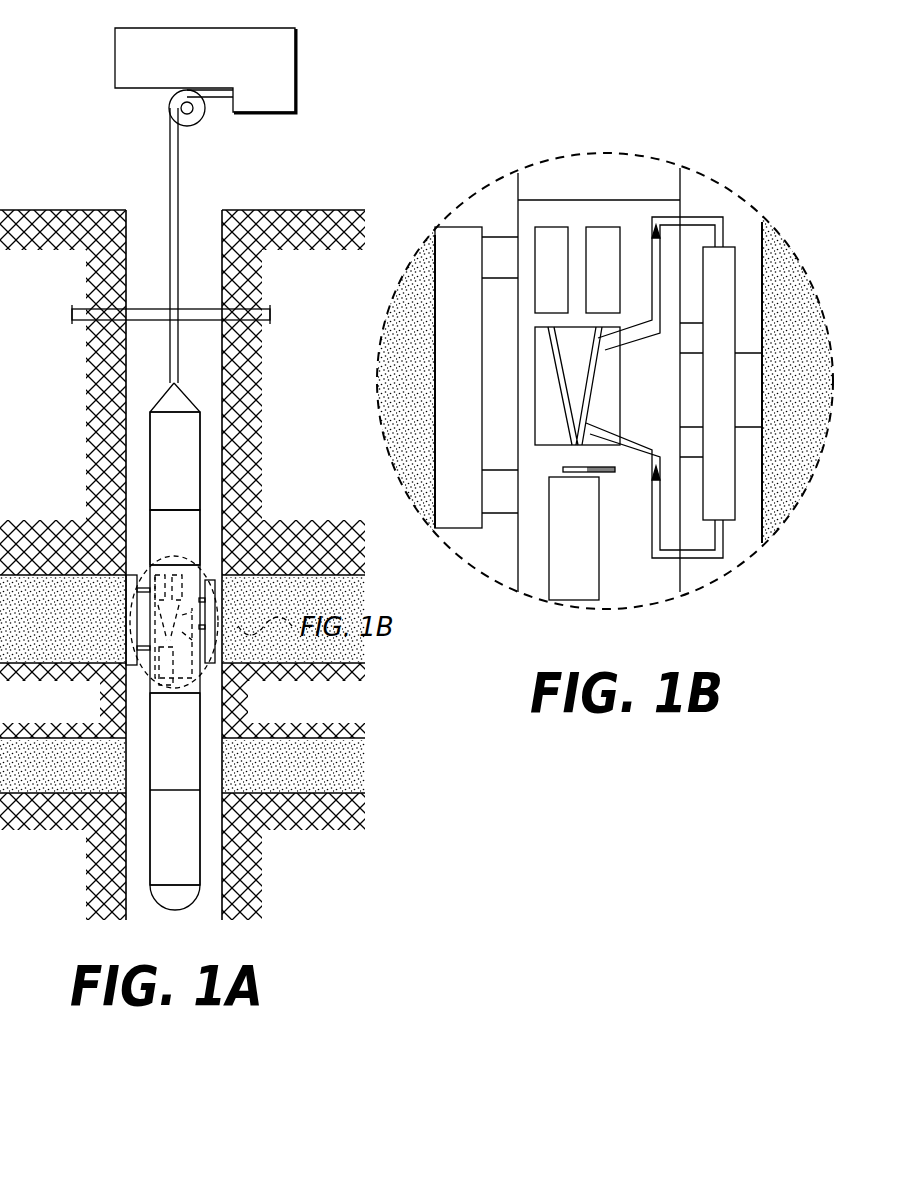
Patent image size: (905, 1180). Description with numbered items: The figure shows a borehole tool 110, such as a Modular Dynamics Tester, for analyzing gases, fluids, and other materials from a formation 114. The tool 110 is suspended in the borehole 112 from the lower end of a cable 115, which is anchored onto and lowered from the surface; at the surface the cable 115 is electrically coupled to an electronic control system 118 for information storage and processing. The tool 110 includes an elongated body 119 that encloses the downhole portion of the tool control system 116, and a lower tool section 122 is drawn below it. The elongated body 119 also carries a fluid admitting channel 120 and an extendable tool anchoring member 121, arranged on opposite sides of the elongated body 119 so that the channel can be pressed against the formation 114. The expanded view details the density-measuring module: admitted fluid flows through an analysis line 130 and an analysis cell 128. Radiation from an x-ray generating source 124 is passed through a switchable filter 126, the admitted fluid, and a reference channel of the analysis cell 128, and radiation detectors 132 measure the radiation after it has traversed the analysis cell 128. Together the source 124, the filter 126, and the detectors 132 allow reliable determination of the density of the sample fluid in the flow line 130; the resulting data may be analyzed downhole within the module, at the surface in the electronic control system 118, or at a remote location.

In FIG. 1A, the borehole tool 110 is at (207, 503).
In FIG. 1A, the borehole 112 is at (220, 248).
In FIG. 1A, the formation 114 is at (81, 633).
In FIG. 1A, the cable 115 is at (169, 172).
In FIG. 1A, the tool control system 116 is at (195, 551).
In FIG. 1A, the electronic control system 118 is at (115, 55).
In FIG. 1A, the elongated body 119 is at (187, 477).
In FIG. 1A, the fluid admitting channel 120 is at (216, 590).
In FIG. 1A, the extendable tool anchoring member 121 is at (134, 650).
In FIG. 1A, the lower tool module 122 is at (195, 747).
In FIG. 1B, the x-ray generating source 124 is at (601, 552).
In FIG. 1B, the switchable filter 126 is at (616, 472).
In FIG. 1B, the analysis cell 128 is at (535, 385).
In FIG. 1B, the analysis line 130 is at (661, 468).
In FIG. 1B, the radiation detectors 132 is at (607, 227).